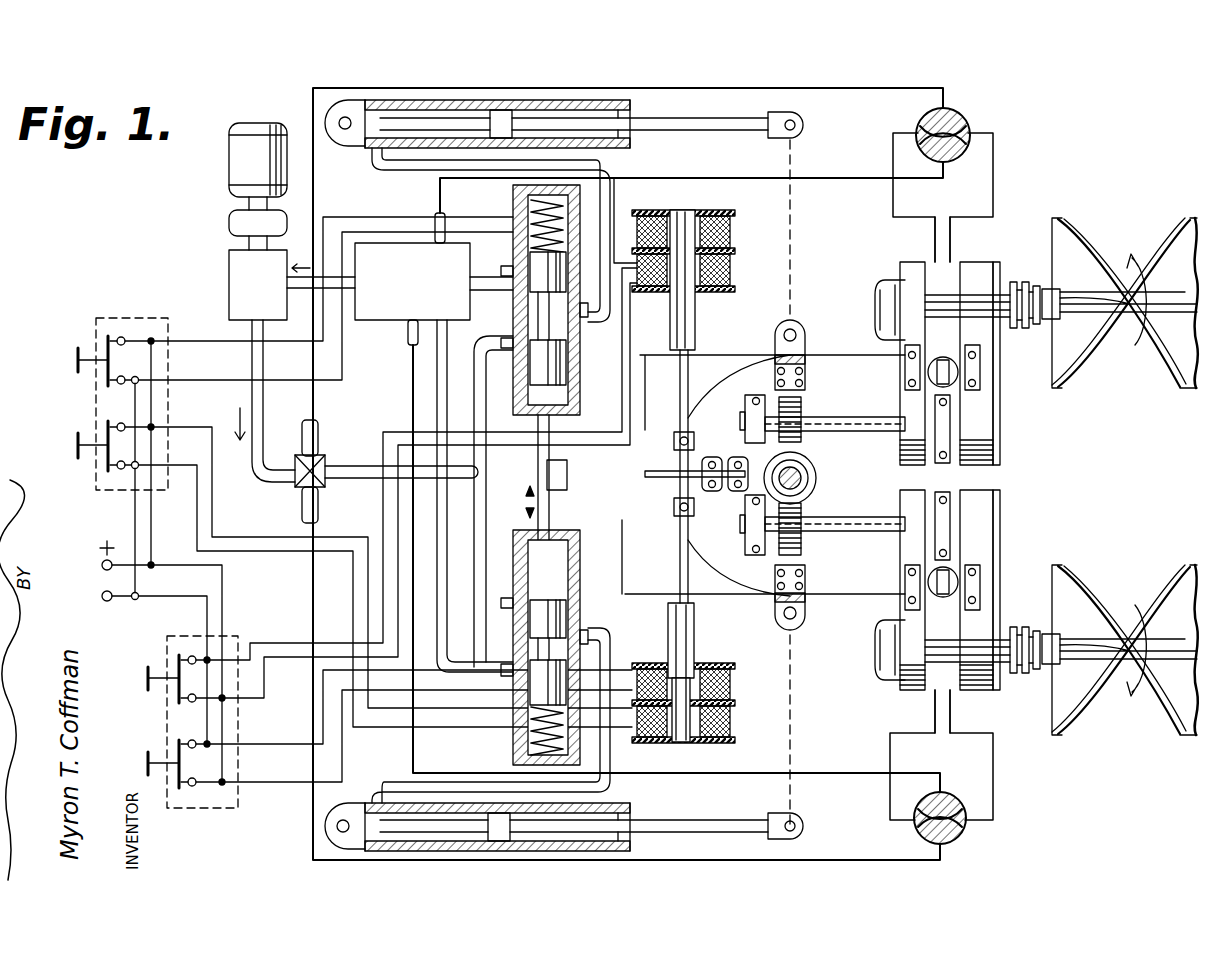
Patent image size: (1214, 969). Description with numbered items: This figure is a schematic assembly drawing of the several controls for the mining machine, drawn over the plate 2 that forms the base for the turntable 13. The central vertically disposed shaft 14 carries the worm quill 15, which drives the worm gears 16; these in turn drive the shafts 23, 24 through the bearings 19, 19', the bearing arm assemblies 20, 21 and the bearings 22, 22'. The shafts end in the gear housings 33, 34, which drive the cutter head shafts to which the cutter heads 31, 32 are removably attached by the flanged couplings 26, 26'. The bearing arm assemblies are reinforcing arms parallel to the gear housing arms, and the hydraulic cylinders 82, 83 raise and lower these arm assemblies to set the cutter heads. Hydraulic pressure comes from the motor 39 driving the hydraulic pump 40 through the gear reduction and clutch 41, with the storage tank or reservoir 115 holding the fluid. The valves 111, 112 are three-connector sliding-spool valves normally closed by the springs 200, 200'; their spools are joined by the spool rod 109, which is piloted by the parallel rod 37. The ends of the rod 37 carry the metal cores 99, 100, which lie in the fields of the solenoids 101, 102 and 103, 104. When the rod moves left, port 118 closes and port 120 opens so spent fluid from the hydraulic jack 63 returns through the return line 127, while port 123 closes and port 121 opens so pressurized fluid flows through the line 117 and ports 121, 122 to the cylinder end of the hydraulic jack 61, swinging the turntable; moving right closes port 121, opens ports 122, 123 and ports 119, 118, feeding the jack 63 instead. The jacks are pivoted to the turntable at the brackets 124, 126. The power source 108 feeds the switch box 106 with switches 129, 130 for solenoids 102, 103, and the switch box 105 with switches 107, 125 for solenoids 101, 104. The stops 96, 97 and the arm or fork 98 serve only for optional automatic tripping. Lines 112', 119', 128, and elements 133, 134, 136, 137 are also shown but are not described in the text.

The plate 2 is at (655, 598).
The turntable 13 is at (845, 357).
The central vertically disposed shaft 14 is at (800, 474).
The worm quill 15 is at (812, 484).
The worm gears 16 is at (802, 408).
The bearing 19 is at (739, 579).
The bearing 19' is at (739, 377).
The bearing arm assembly 20 is at (890, 676).
The bearing arm assembly 21 is at (905, 282).
The bearing 22 is at (983, 526).
The bearing 22' is at (988, 429).
The shaft 23 is at (862, 548).
The shaft 24 is at (860, 422).
The flanged coupling 26 is at (1035, 674).
The flanged coupling 26' is at (1034, 281).
The cutter head 31 is at (1183, 557).
The cutter head 32 is at (1180, 211).
The gear housing 33 is at (1000, 505).
The gear housing 34 is at (1000, 452).
The rod 37 is at (680, 383).
The motor 39 is at (229, 160).
The hydraulic pump 40 is at (229, 222).
The gear reduction and clutch 41 is at (229, 279).
The hydraulic jack 61 is at (628, 814).
The hydraulic jack 63 is at (632, 146).
The hydraulic cylinder 82 is at (918, 600).
The hydraulic cylinder 83 is at (930, 362).
The stop 96 is at (675, 440).
The stop 97 is at (668, 540).
The arm or fork 98 is at (692, 460).
The metal core 99 is at (676, 322).
The metal core 100 is at (690, 652).
The solenoid 101 is at (735, 220).
The solenoid 102 is at (732, 282).
The solenoid 103 is at (732, 678).
The solenoid 104 is at (730, 717).
The switch box 105 is at (128, 318).
The switch box 106 is at (192, 808).
The switch 107 is at (78, 360).
The power source 108 is at (92, 565).
The rod 109 is at (536, 450).
The valve 111 is at (555, 423).
The valve 112 is at (536, 630).
The hydraulic line 112' is at (481, 715).
The storage tank or reservoir 115 is at (392, 322).
The line 117 is at (350, 468).
The port 118 is at (501, 342).
The port 119 is at (598, 335).
The hydraulic line 119' is at (489, 235).
The port 120 is at (508, 262).
The port 121 is at (508, 604).
The port 122 is at (585, 632).
The port 123 is at (515, 670).
The bracket 124 is at (805, 338).
The switch 125 is at (78, 445).
The bracket 126 is at (800, 630).
The return line 127 is at (490, 296).
The hydraulic line 128 is at (440, 396).
The switch 129 is at (148, 678).
The switch 130 is at (148, 763).
The valve 133 is at (962, 836).
The valve 134 is at (963, 118).
The shaft 136 is at (935, 714).
The shaft 137 is at (935, 238).
The spring 200 is at (595, 216).
The spring 200' is at (506, 731).